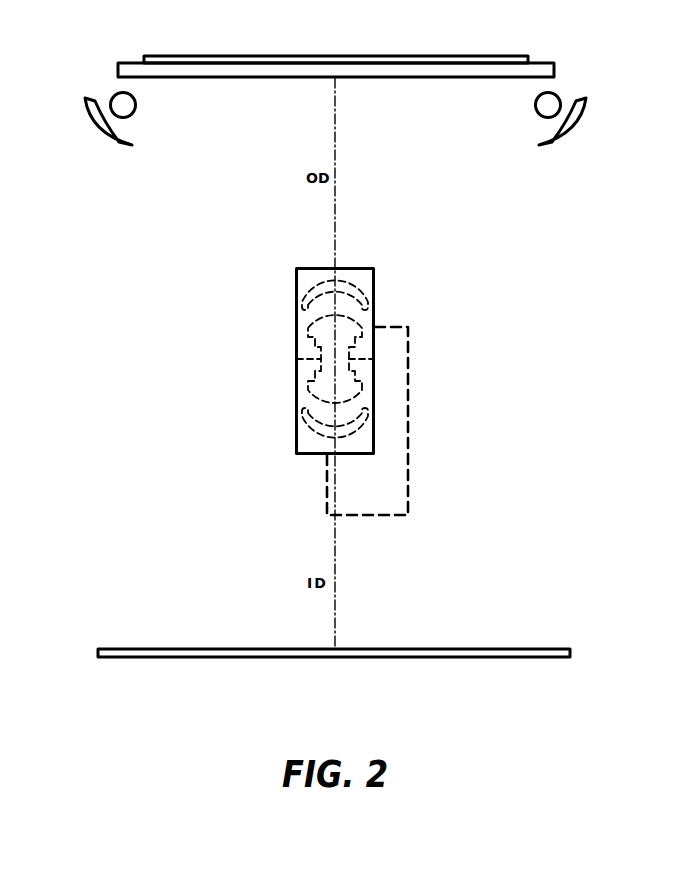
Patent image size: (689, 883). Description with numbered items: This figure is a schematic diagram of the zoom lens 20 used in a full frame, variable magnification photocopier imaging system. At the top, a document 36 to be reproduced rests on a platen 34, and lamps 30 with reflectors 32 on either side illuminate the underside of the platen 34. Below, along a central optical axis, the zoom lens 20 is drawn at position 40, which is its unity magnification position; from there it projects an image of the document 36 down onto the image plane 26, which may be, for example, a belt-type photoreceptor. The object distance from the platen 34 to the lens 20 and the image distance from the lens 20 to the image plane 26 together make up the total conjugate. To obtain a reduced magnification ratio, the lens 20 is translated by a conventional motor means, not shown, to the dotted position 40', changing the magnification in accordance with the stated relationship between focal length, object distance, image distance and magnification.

The zoom lens 20 is at (278, 308).
The image plane 26 is at (460, 648).
The lamps 30 is at (136, 105).
The reflectors 32 is at (97, 128).
The platen 34 is at (373, 78).
The document 36 is at (407, 55).
The unity magnification position 40 is at (351, 336).
The dotted position 40' is at (395, 421).